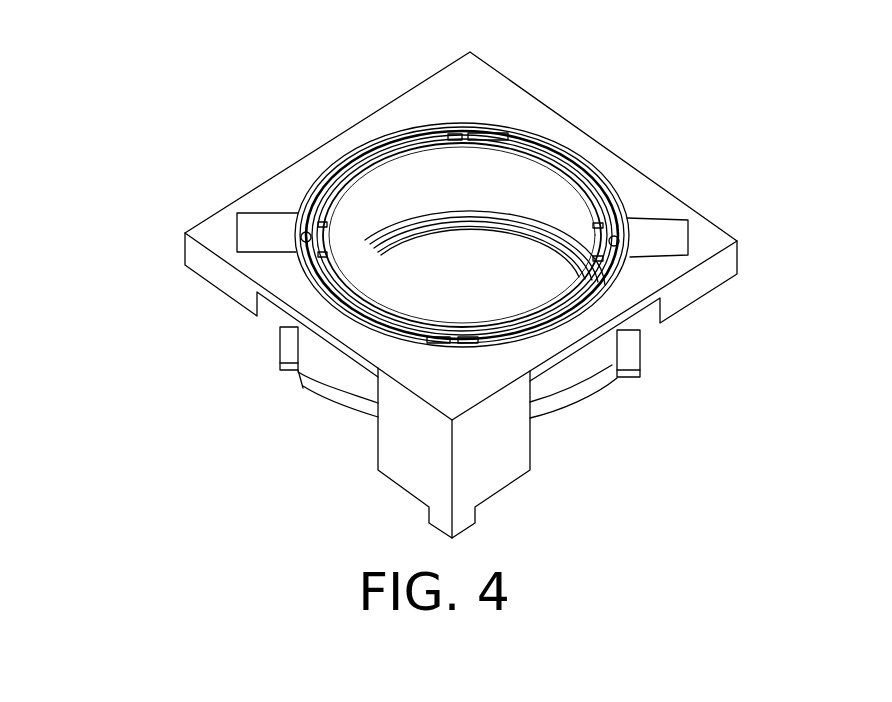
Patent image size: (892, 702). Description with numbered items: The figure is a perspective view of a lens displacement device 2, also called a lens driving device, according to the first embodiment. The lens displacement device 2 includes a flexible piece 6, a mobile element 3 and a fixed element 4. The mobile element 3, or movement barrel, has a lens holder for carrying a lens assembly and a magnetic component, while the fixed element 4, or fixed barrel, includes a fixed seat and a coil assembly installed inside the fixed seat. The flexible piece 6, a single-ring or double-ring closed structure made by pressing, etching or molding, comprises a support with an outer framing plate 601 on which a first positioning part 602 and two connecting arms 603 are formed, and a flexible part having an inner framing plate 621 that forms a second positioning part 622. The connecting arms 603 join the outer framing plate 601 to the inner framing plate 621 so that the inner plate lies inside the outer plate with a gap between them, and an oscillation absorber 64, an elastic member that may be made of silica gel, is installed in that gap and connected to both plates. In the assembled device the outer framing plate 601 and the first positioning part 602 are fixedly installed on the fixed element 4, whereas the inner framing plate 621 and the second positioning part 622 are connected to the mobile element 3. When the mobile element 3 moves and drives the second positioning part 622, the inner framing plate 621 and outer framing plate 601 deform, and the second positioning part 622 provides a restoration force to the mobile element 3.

The lens displacement device 2 is at (160, 165).
The mobile element 3 is at (499, 236).
The fixed element 4 is at (262, 185).
The flexible piece 6 is at (790, 165).
The outer framing plate 601 is at (507, 140).
The first positioning part 602 is at (653, 236).
The connecting arms 603 is at (467, 137).
The inner framing plate 621 is at (540, 148).
The second positioning part 622 is at (604, 240).
The oscillation absorber 64 is at (310, 236).